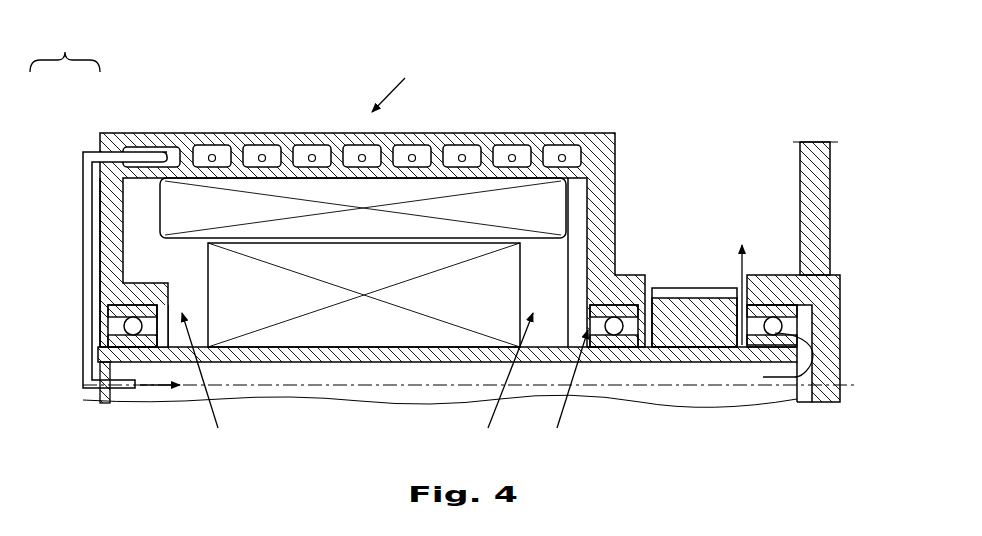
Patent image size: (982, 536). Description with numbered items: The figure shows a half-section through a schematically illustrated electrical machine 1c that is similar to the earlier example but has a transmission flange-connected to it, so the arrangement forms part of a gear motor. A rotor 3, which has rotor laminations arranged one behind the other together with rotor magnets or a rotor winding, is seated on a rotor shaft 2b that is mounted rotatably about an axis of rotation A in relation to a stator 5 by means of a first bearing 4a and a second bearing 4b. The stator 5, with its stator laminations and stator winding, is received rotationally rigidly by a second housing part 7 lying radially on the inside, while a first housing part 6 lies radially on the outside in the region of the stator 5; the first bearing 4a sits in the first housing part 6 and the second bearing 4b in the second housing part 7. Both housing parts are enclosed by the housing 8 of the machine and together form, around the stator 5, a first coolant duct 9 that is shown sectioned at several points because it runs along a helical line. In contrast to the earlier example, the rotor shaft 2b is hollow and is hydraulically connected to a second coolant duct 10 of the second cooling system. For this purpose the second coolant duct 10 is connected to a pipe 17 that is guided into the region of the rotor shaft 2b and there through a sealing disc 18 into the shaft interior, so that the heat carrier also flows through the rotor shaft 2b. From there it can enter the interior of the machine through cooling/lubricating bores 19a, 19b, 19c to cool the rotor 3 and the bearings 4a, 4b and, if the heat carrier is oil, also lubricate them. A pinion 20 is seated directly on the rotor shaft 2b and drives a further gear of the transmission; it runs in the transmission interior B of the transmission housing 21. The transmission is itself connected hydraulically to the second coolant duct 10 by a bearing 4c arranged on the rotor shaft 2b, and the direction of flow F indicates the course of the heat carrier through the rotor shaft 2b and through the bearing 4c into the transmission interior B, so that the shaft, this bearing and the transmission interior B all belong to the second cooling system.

The electrical machine 1c is at (409, 90).
The rotor shaft 2b is at (172, 393).
The rotor 3 is at (502, 277).
The first bearing 4a is at (120, 328).
The second bearing 4b is at (627, 298).
The bearing 4c is at (813, 300).
The stator 5 is at (170, 215).
The first housing part 6 is at (110, 148).
The second housing part 7 is at (133, 148).
The housing 8 is at (65, 46).
The first coolant duct 9 is at (567, 158).
The second coolant duct 10 is at (560, 158).
The pipe 17 is at (88, 336).
The sealing disc 18 is at (102, 395).
The cooling/lubricating bore 19a is at (229, 379).
The cooling/lubricating bore 19b is at (484, 378).
The cooling/lubricating bore 19c is at (545, 386).
The pinion 20 is at (695, 293).
The transmission housing 21 is at (820, 198).
The axis of rotation A is at (480, 387).
The transmission interior B is at (742, 170).
The direction of flow F is at (753, 291).